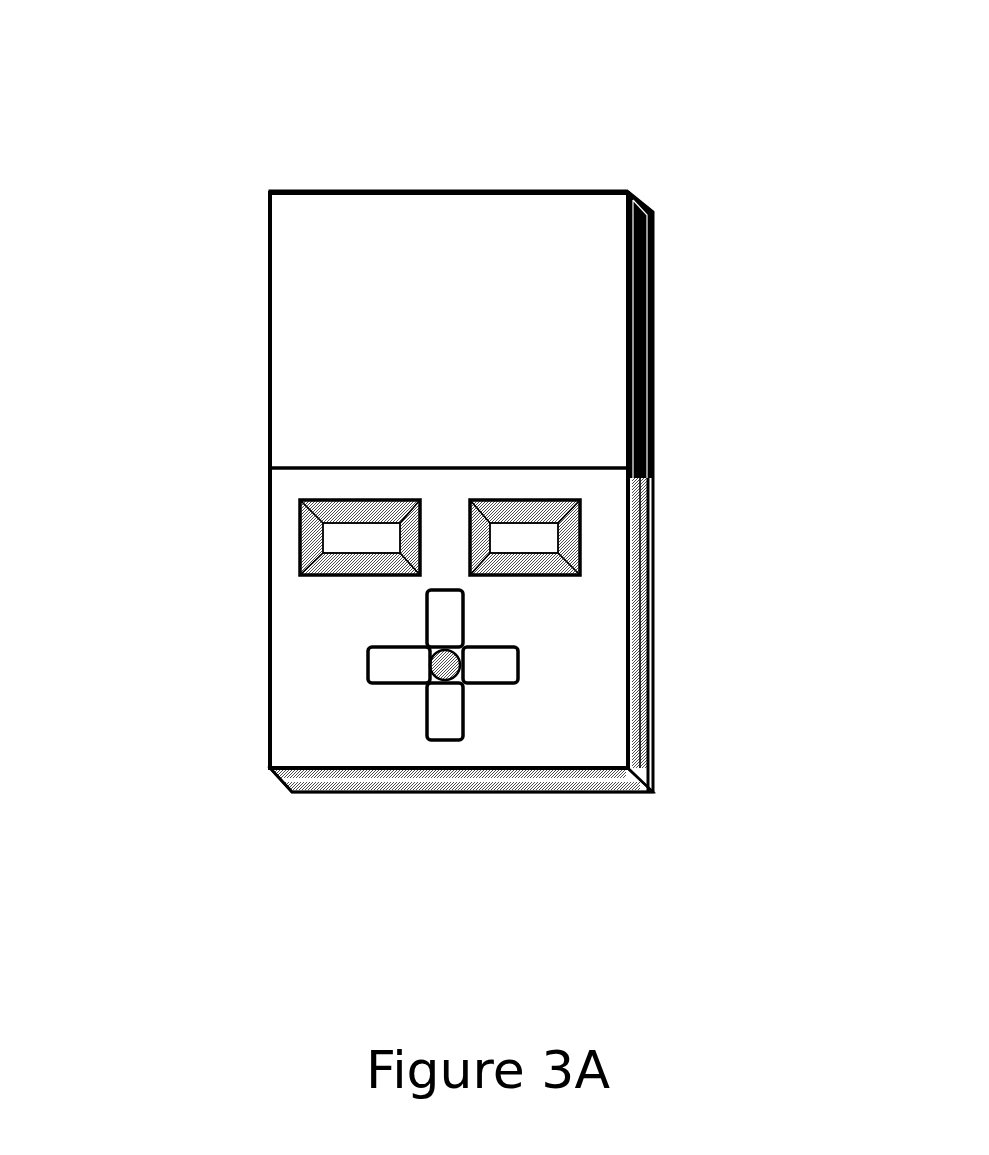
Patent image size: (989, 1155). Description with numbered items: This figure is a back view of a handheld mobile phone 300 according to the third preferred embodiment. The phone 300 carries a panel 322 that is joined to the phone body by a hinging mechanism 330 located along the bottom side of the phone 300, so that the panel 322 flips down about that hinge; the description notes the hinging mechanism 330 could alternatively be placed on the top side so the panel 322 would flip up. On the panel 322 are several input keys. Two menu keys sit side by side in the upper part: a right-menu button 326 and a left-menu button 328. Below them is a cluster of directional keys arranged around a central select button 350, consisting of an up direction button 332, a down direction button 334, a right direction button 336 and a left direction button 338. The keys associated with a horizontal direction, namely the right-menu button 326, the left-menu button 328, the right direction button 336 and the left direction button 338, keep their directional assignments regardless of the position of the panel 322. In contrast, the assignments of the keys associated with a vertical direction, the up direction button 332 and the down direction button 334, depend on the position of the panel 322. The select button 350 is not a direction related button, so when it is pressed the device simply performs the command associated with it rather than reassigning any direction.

The phone 300 is at (116, 43).
The panel 322 is at (455, 629).
The right-menu button 326 is at (300, 543).
The left-menu button 328 is at (592, 543).
The hinging mechanism 330 is at (348, 793).
The up direction button 332 is at (440, 590).
The down direction button 334 is at (430, 744).
The right direction button 336 is at (368, 666).
The left direction button 338 is at (522, 659).
The select button 350 is at (462, 684).